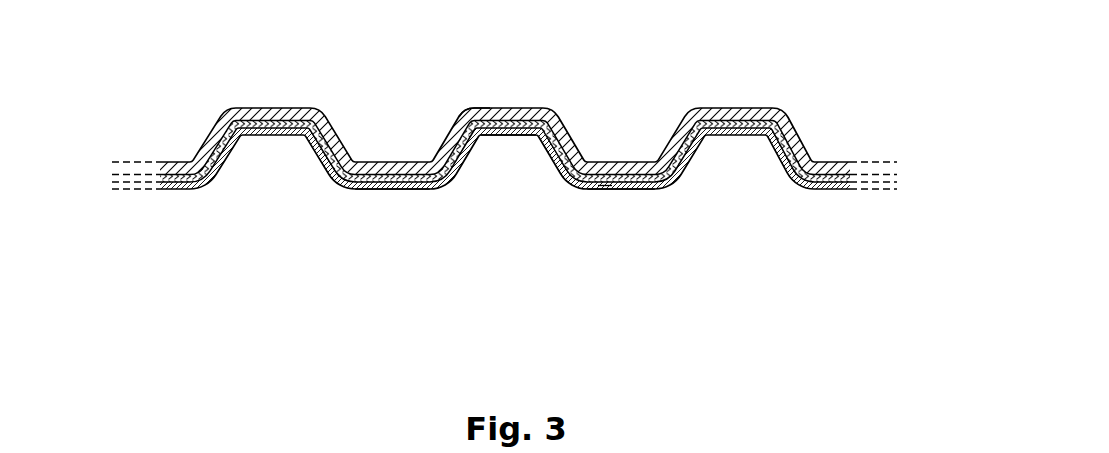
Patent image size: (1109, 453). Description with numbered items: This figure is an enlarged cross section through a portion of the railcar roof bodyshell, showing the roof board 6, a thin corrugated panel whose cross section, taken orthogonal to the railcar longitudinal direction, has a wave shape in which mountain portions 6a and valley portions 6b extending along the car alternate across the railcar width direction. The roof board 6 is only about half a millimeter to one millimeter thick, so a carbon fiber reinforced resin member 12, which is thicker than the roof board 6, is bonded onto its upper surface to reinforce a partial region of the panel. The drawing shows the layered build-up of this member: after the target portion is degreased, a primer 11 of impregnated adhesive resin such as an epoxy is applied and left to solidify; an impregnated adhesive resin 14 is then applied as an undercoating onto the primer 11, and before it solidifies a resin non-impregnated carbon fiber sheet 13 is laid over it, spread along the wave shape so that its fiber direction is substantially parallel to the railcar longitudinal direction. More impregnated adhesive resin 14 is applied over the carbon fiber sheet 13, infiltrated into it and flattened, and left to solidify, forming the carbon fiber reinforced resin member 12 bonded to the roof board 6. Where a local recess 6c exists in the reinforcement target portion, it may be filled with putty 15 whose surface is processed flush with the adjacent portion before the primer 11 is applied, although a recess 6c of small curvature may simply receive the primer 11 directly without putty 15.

The roof board 6 is at (504, 150).
The mountain portions 6a is at (505, 136).
The valley portions 6b is at (389, 191).
The local recess 6c is at (630, 192).
The primer 11 is at (408, 178).
The carbon fiber reinforced resin member 12 is at (473, 108).
The carbon fiber sheet 13 is at (500, 108).
The impregnated adhesive resin 14 is at (528, 108).
The putty 15 is at (609, 186).